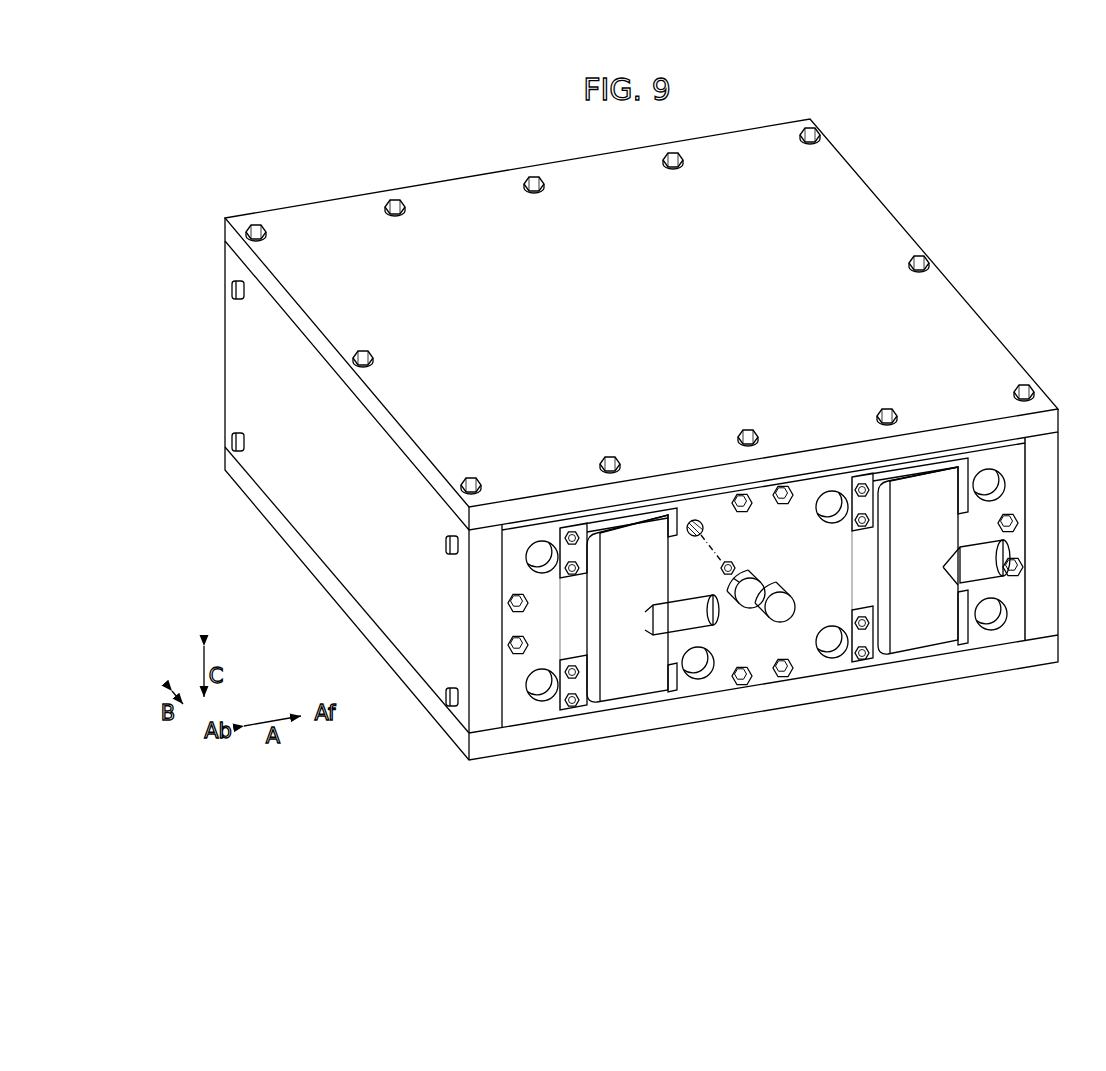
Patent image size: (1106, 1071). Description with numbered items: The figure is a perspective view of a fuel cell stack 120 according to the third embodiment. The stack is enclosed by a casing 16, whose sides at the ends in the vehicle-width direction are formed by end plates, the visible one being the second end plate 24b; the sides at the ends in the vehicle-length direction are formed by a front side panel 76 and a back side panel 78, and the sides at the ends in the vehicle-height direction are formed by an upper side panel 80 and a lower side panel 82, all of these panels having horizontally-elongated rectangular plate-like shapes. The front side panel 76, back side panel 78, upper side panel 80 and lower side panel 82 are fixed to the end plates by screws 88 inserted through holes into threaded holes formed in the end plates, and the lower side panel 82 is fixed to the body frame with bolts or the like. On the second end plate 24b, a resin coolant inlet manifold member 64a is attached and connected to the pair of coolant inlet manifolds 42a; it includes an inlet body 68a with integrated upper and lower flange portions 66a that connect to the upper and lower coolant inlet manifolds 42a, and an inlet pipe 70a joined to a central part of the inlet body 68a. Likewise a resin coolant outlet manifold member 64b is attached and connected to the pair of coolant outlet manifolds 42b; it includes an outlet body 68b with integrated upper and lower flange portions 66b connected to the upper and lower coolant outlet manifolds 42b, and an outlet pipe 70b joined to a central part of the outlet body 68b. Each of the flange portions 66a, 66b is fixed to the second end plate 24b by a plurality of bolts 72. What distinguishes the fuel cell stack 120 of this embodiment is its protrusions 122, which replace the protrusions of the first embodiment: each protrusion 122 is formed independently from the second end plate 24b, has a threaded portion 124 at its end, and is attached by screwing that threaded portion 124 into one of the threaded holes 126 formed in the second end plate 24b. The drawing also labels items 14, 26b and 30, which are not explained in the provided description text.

The battery pack 14 is at (890, 245).
The casing 16 is at (905, 210).
The second end plate 24b is at (1013, 640).
The connector terminals 26b is at (781, 612).
The bolts 30 is at (513, 636).
The coolant inlet manifolds 42a is at (607, 550).
The coolant outlet manifolds 42b is at (900, 497).
The coolant inlet manifold member 64a is at (648, 686).
The coolant outlet manifold member 64b is at (937, 636).
The flange portions 66a is at (645, 518).
The flange portions 66b is at (948, 457).
The inlet body 68a is at (633, 547).
The outlet body 68b is at (926, 500).
The inlet pipe 70a is at (692, 606).
The outlet pipe 70b is at (1000, 568).
The bolts 72 is at (570, 532).
The front side panel 76 is at (1048, 458).
The back side panel 78 is at (393, 612).
The upper side panel 80 is at (938, 299).
The lower side panel 82 is at (447, 725).
The screws 88 is at (677, 172).
The fuel cell stack 120 is at (478, 146).
The protrusions 122 is at (538, 546).
The threaded portion 124 is at (738, 562).
The threaded holes 126 is at (695, 520).